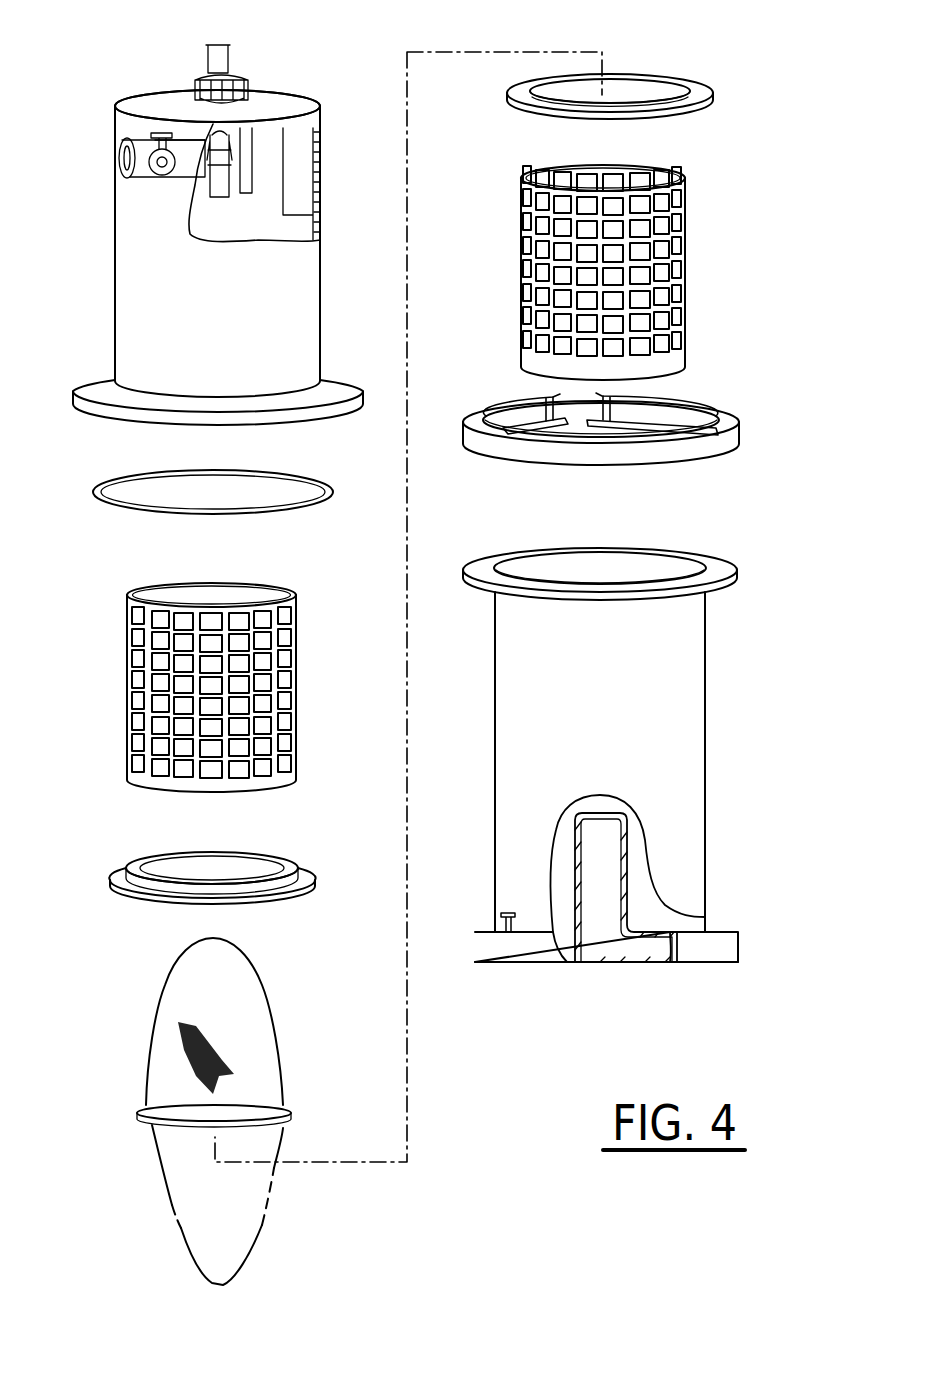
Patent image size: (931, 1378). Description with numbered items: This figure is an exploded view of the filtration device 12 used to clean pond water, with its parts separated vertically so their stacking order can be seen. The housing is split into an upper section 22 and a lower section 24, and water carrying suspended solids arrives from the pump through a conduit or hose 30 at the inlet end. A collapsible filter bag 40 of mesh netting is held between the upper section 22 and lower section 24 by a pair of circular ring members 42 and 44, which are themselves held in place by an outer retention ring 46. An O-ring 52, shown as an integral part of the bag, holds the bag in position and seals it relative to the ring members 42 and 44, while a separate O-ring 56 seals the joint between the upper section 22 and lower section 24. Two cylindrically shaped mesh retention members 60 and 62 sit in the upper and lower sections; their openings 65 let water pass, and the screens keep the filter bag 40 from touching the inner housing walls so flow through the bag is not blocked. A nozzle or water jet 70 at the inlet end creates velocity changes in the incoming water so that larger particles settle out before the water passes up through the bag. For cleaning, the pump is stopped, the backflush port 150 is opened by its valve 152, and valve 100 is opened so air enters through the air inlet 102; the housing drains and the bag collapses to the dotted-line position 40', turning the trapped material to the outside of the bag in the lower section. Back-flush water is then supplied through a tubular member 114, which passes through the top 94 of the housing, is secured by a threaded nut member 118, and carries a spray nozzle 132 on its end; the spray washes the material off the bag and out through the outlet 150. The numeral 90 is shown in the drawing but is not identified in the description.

The filtration device 12 is at (500, 1000).
The upper section 22 is at (322, 268).
The lower section 24 is at (708, 668).
The conduit or hose 30 is at (716, 933).
The collapsible filter bag 40 is at (240, 1021).
The collapsed filter bag position 40' is at (249, 1205).
The circular ring member 42 is at (305, 875).
The circular ring member 44 is at (705, 90).
The outer retention ring 46 is at (735, 450).
The O-ring 52 is at (284, 1112).
The O-ring 56 is at (285, 506).
The mesh retention member 60 is at (290, 640).
The mesh retention member 62 is at (680, 262).
The openings 65 is at (537, 246).
The nozzle or water jet 70 is at (623, 873).
The inlet pipe 90 is at (130, 175).
The top 94 is at (300, 100).
The valve 100 is at (167, 133).
The air inlet 102 is at (165, 183).
The tubular member 114 is at (226, 63).
The threaded nut member 118 is at (240, 85).
The spray nozzle 132 is at (209, 198).
The outlet or backflush port 150 is at (517, 950).
The valve 152 is at (508, 910).